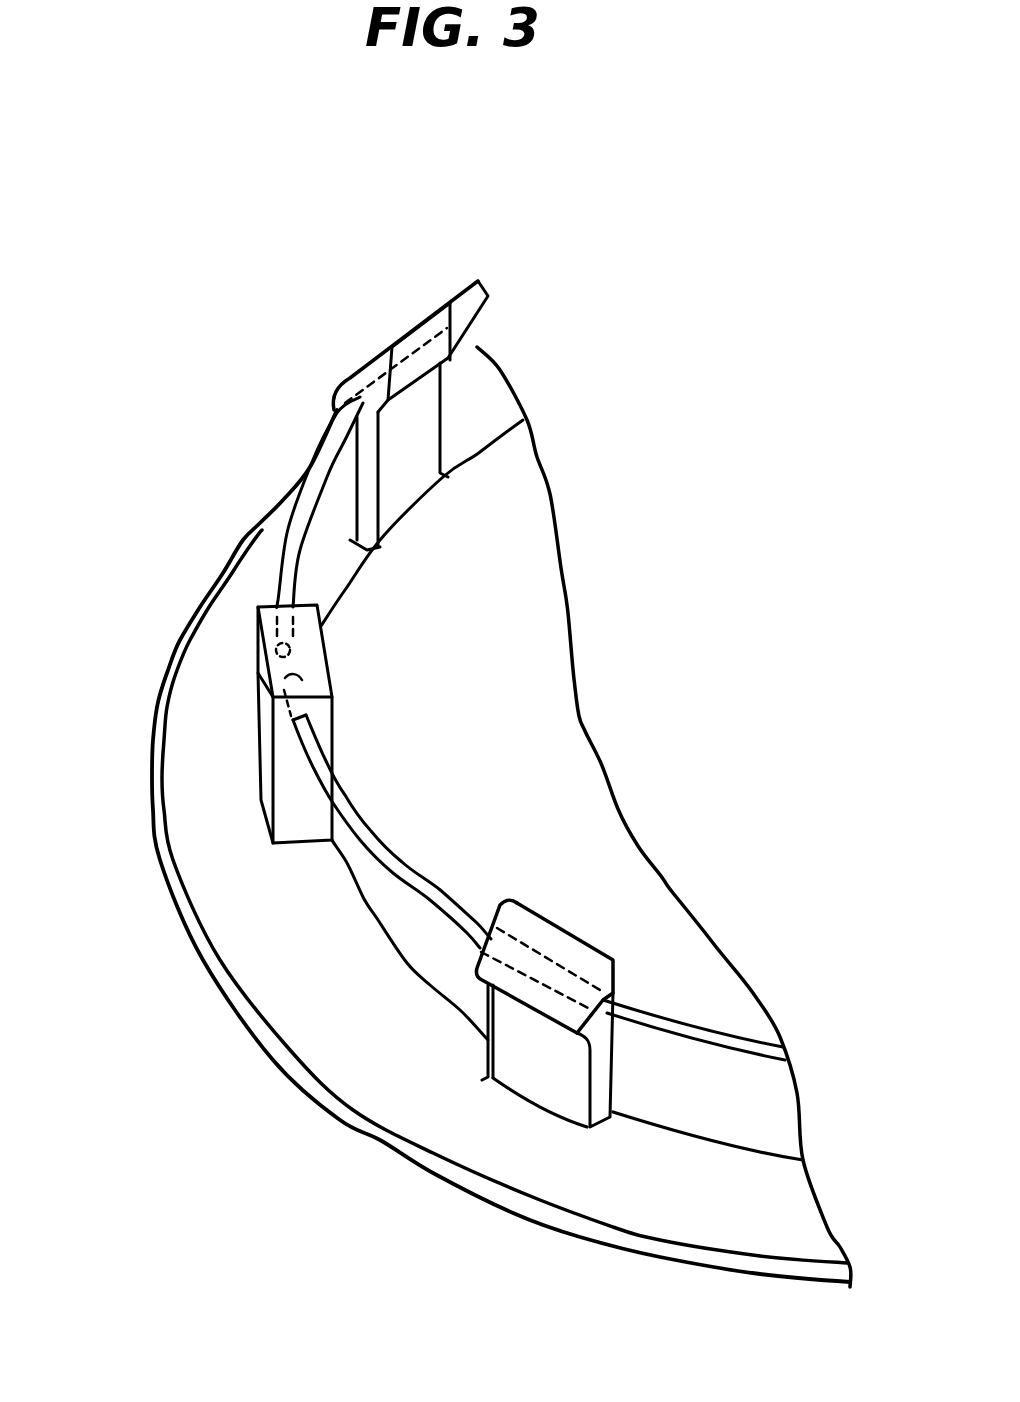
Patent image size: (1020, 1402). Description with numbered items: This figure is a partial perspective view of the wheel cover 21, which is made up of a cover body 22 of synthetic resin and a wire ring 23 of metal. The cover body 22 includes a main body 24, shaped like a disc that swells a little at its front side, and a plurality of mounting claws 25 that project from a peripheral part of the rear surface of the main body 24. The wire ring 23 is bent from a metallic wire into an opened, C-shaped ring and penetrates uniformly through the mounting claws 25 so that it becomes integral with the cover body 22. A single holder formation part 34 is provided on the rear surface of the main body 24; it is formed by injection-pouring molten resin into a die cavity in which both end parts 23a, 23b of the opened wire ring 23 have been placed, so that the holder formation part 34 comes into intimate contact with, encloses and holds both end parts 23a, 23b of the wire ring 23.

The wheel cover 21 is at (184, 608).
The cover body 22 is at (152, 733).
The wire ring 23 is at (393, 840).
The end part of the wire ring 23a is at (302, 680).
The end part of the wire ring 23b is at (305, 648).
The main body 24 is at (270, 977).
The mounting claw 25 is at (455, 330).
The holder formation part 34 is at (320, 656).